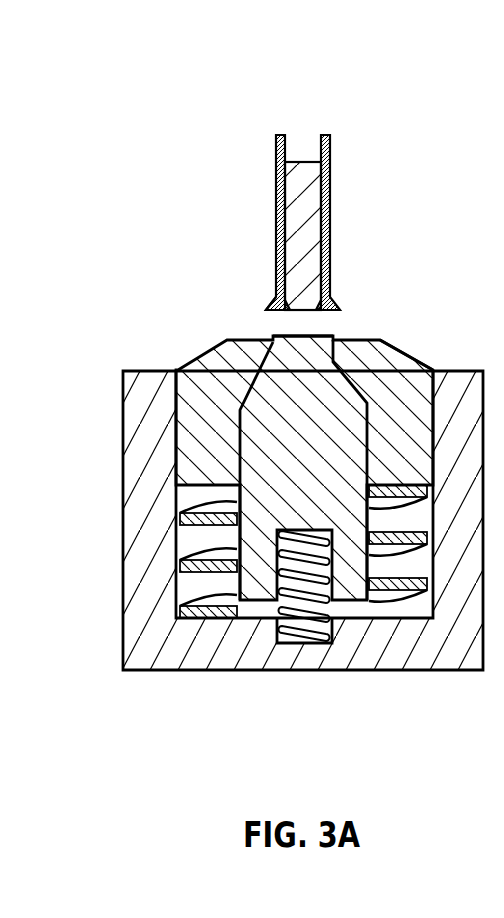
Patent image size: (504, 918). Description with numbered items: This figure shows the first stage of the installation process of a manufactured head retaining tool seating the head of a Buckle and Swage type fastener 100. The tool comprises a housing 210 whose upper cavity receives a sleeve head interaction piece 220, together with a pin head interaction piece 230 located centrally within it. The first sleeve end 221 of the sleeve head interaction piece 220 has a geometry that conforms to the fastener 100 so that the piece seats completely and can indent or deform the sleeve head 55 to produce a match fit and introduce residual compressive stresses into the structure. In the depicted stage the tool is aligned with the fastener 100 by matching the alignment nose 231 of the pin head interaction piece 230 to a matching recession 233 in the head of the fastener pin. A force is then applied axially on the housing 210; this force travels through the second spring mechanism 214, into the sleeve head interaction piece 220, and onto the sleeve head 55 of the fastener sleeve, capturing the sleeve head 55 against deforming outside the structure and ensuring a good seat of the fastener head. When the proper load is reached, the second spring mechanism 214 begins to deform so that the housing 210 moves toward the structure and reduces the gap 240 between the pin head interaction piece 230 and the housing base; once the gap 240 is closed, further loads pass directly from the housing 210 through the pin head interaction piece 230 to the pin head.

The fastener 100 is at (290, 201).
The sleeve head 55 is at (273, 305).
The alignment nose 231 is at (296, 332).
The matching recession 233 is at (303, 310).
The first sleeve end 221 is at (369, 340).
The pin head interaction piece 230 is at (338, 394).
The sleeve head interaction piece 220 is at (207, 372).
The second spring mechanism 214 is at (193, 521).
The housing 210 is at (136, 657).
The gap 240 is at (352, 612).